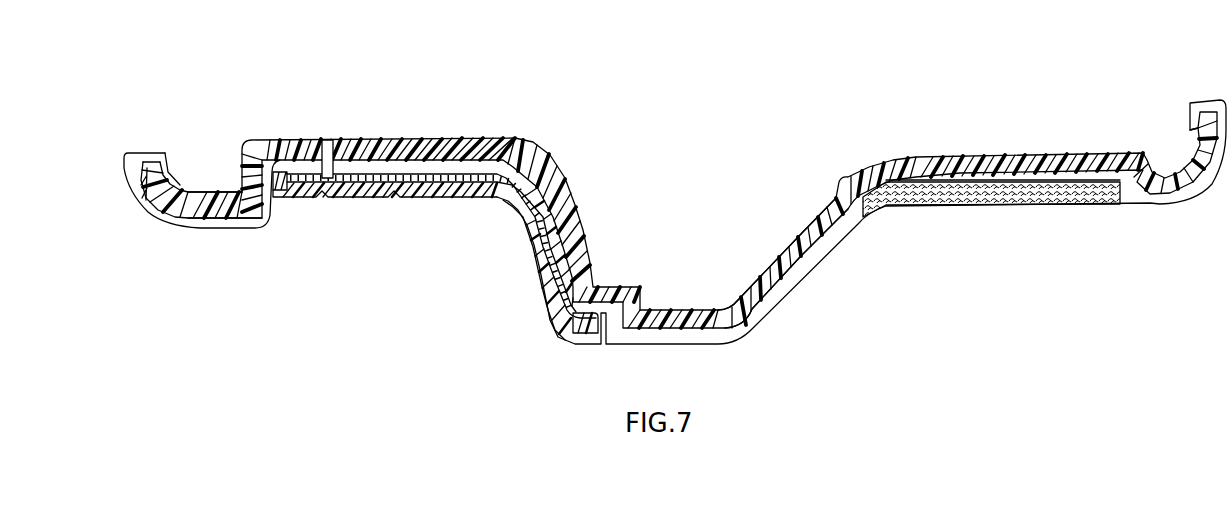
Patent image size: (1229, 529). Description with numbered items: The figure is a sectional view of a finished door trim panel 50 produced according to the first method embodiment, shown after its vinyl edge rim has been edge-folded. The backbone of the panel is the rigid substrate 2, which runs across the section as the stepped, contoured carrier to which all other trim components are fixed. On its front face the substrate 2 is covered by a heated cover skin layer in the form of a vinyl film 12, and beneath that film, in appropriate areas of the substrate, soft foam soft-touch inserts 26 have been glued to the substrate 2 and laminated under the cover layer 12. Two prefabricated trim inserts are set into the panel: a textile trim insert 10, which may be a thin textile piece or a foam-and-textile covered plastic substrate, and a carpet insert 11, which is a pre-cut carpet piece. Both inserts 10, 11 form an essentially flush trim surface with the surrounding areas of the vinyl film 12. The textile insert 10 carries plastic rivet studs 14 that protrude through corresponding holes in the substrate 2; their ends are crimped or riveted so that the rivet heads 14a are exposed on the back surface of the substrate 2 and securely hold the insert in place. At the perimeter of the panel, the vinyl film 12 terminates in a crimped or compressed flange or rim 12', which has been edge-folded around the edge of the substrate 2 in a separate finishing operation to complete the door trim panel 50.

The door trim panel 50 is at (471, 92).
The substrate 2 is at (786, 255).
The textile trim insert 10 is at (431, 199).
The carpet insert 11 is at (983, 205).
The vinyl film 12 is at (861, 227).
The rim 12' is at (202, 182).
The plastic rivet studs 14 is at (331, 162).
The rivet heads 14a is at (340, 137).
The soft foam inserts 26 is at (205, 206).